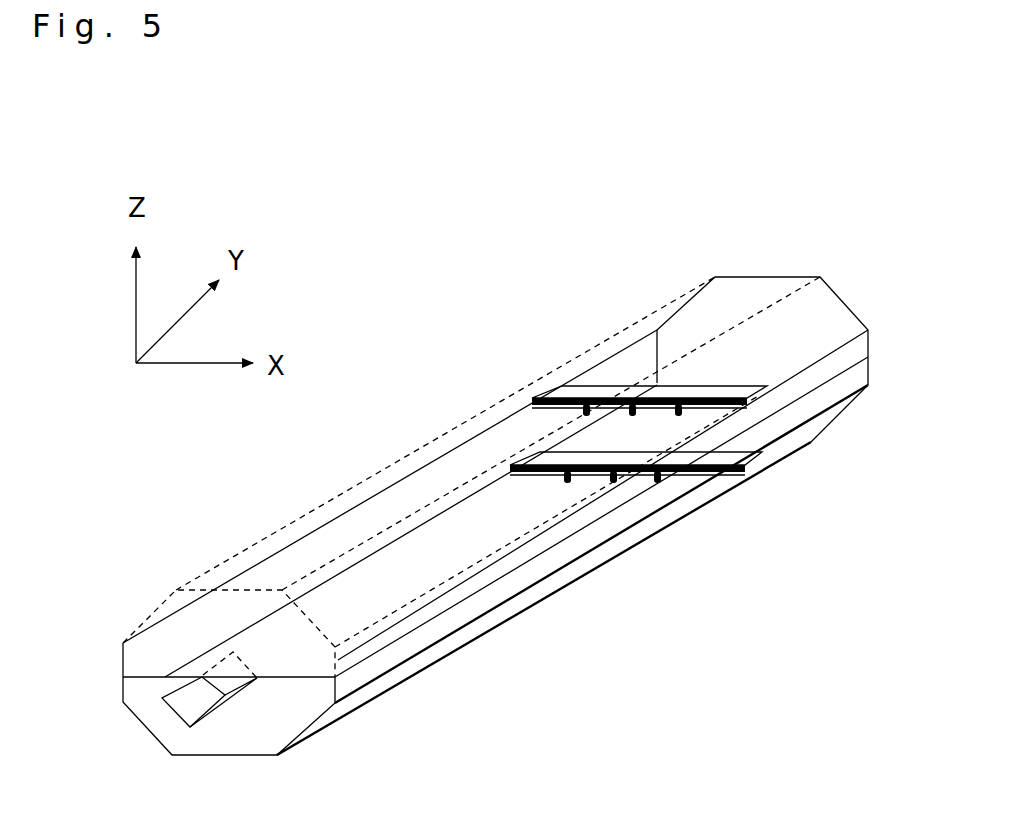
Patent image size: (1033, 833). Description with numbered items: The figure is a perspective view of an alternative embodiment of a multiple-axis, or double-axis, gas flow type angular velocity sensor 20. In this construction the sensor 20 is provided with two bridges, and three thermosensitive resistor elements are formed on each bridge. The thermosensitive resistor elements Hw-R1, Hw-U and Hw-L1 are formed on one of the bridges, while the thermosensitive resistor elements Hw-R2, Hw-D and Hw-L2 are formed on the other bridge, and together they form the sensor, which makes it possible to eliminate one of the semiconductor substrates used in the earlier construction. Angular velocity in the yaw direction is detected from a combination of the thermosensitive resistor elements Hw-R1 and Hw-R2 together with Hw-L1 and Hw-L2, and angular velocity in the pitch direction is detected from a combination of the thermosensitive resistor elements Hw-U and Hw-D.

The multiple-axis gas flow type angular velocity sensor 20 is at (472, 232).
The thermosensitive resistor element Hw-U is at (622, 380).
The thermosensitive resistor element Hw-D is at (620, 490).
The thermosensitive resistor element Hw-L1 is at (570, 410).
The thermosensitive resistor element Hw-L2 is at (555, 482).
The thermosensitive resistor element Hw-R1 is at (690, 423).
The thermosensitive resistor element Hw-R2 is at (669, 489).